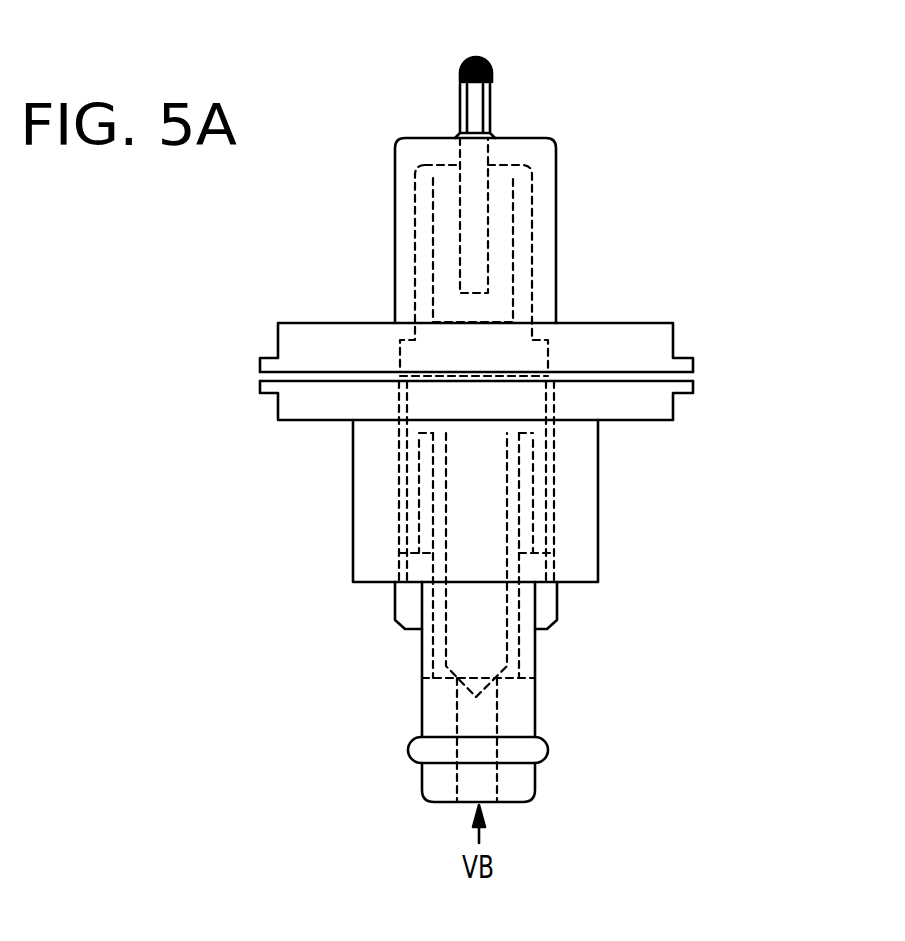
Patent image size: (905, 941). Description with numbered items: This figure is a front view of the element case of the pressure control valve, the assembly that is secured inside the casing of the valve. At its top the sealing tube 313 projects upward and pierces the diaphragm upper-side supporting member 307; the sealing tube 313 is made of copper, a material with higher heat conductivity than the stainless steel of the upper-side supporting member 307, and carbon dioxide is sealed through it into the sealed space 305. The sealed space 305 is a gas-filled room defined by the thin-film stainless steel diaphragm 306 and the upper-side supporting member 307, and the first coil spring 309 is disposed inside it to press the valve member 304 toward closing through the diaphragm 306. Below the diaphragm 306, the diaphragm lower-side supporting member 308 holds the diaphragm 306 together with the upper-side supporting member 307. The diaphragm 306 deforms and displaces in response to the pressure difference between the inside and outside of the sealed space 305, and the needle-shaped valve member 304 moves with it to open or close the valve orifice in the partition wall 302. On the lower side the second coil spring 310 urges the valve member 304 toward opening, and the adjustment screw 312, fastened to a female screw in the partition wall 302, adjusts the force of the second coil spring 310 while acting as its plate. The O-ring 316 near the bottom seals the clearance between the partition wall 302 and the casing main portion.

The partition wall 302 is at (577, 537).
The valve member 304 is at (480, 656).
The sealed space 305 is at (502, 213).
The diaphragm 306 is at (672, 376).
The diaphragm upper-side supporting member 307 is at (645, 342).
The diaphragm lower-side supporting member 308 is at (645, 403).
The first coil spring 309 is at (522, 247).
The second coil spring 310 is at (527, 490).
The adjustment screw 312 is at (548, 612).
The sealing tube 313 is at (490, 104).
The O-ring 316 is at (437, 752).